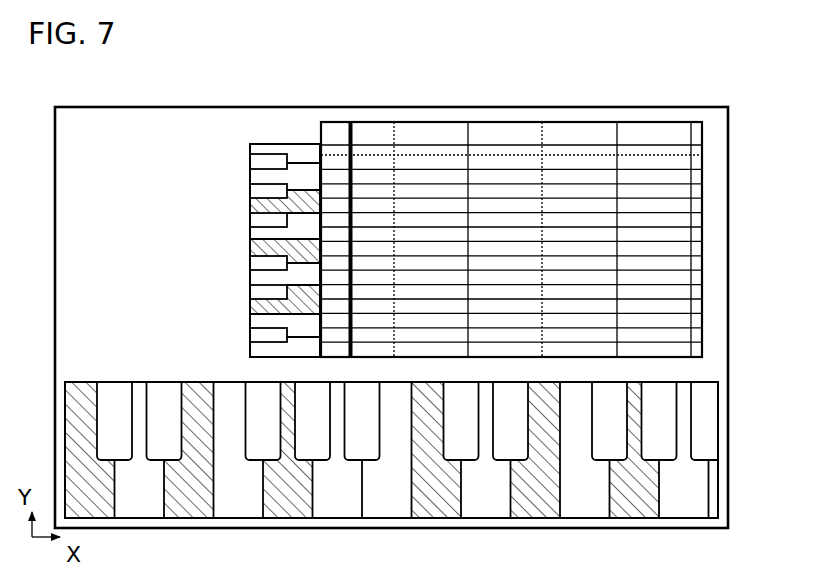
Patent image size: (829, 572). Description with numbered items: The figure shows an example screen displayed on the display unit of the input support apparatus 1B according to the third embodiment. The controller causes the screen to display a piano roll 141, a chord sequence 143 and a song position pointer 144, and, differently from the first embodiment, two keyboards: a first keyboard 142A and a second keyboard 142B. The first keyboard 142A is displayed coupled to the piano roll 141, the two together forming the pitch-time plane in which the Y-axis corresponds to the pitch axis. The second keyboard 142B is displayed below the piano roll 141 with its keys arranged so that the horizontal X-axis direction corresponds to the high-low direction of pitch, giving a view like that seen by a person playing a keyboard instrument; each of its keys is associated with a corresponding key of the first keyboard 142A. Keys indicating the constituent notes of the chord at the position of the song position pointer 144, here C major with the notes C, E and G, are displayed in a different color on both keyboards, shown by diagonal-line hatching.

The input support apparatus 1B is at (579, 83).
The piano roll 141 is at (703, 162).
The first keyboard 142A is at (273, 143).
The second keyboard 142B is at (90, 381).
The chord sequence 143 is at (384, 121).
The song position pointer 144 is at (353, 141).